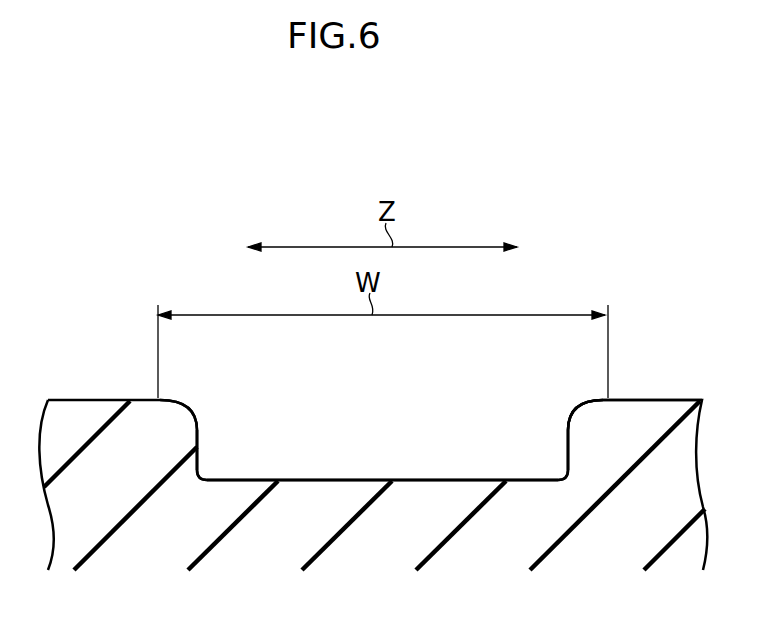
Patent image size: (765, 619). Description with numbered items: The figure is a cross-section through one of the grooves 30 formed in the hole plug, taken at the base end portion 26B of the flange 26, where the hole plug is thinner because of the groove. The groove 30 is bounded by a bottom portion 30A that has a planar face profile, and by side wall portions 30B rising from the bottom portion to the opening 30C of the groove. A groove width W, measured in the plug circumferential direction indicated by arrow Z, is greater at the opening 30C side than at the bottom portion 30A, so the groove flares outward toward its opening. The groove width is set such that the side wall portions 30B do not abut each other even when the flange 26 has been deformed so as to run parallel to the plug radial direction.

The flange 26 is at (370, 449).
The base end portion 26B is at (87, 398).
The groove 30 is at (459, 428).
The bottom portion 30A is at (370, 480).
The side wall portion 30B is at (197, 447).
The opening 30C is at (606, 398).